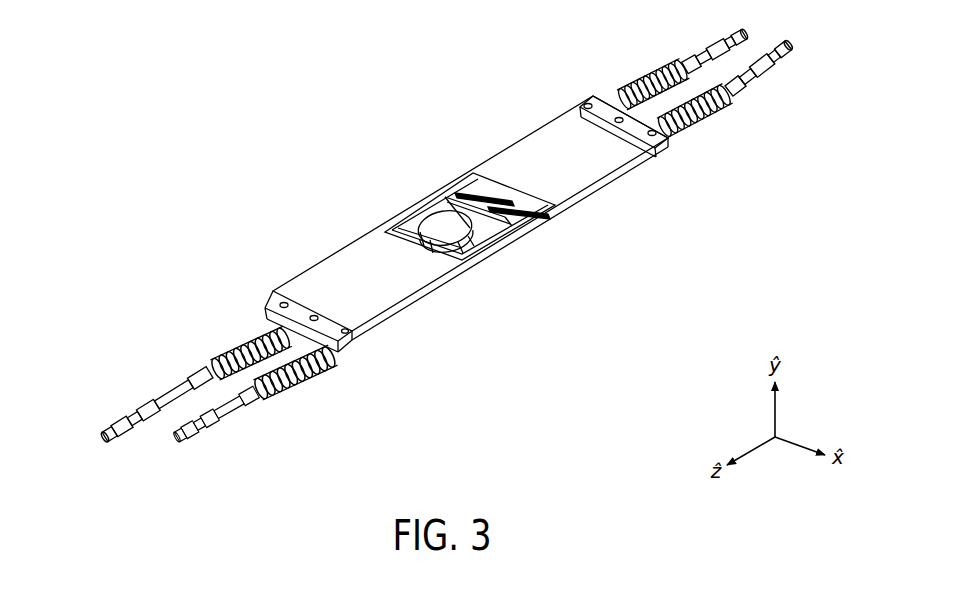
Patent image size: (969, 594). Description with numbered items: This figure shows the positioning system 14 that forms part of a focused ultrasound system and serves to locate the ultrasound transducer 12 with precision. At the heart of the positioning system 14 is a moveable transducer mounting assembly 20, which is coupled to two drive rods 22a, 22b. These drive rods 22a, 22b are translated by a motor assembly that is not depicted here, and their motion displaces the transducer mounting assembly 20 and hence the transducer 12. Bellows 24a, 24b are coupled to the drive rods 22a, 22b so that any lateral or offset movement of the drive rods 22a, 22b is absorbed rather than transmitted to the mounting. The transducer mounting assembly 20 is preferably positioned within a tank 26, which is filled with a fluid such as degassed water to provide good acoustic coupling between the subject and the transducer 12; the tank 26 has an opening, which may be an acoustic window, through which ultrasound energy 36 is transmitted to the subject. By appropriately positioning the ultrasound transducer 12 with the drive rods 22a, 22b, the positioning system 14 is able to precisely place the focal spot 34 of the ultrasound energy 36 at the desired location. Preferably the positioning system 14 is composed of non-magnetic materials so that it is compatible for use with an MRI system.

The positioning system 14 is at (303, 132).
The ultrasound transducer 12 is at (473, 240).
The transducer mounting assembly 20 is at (471, 180).
The tank 26 is at (638, 168).
The focal spot 34 is at (444, 194).
The ultrasound energy 36 is at (430, 217).
The drive rod 22a is at (716, 44).
The drive rod 22b is at (776, 70).
The bellows 24a is at (669, 66).
The bellows 24b is at (710, 115).